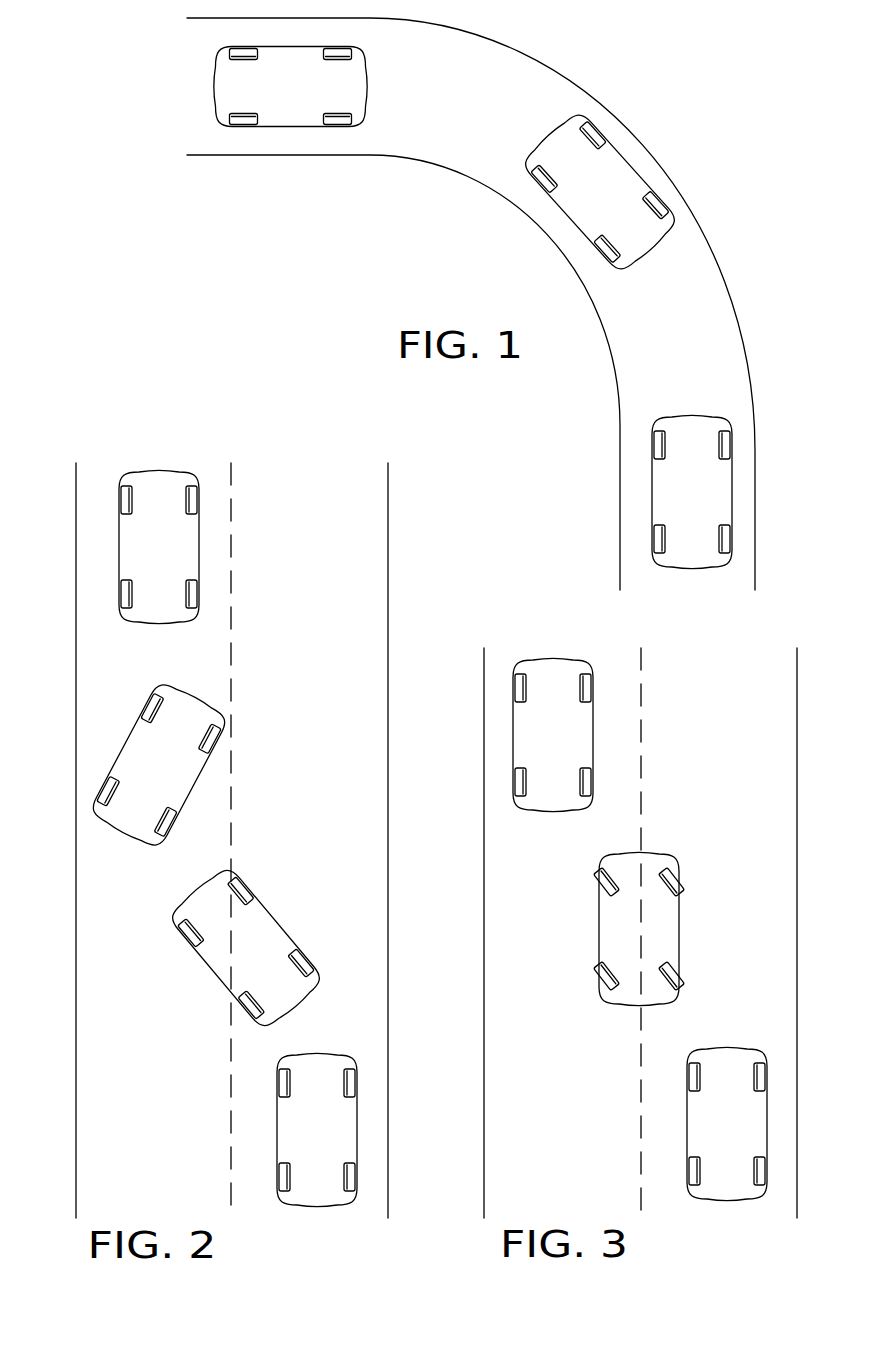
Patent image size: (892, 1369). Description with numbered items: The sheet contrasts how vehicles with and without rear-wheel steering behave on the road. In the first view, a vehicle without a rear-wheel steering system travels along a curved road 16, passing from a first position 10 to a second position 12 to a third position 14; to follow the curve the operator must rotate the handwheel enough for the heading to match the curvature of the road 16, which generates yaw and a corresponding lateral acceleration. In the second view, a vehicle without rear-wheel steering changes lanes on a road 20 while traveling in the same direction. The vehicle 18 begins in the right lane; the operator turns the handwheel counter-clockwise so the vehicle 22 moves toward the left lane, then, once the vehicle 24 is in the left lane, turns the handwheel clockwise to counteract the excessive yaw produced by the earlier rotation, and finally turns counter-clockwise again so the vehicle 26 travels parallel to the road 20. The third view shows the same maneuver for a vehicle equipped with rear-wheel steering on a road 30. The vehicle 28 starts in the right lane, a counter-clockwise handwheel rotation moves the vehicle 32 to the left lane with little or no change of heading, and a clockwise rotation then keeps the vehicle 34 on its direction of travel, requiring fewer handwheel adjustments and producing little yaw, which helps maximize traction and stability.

In FIG. 1, the first position 10 is at (652, 492).
In FIG. 1, the second position 12 is at (570, 216).
In FIG. 1, the third position 14 is at (291, 128).
In FIG. 1, the curved road 16 is at (542, 82).
In FIG. 2, the vehicle 18 is at (357, 1130).
In FIG. 2, the road 20 is at (107, 932).
In FIG. 2, the vehicle 22 is at (293, 948).
In FIG. 2, the vehicle 24 is at (125, 745).
In FIG. 2, the vehicle 26 is at (118, 548).
In FIG. 3, the vehicle 28 is at (768, 1127).
In FIG. 3, the road 30 is at (512, 978).
In FIG. 3, the vehicle 32 is at (680, 930).
In FIG. 3, the vehicle 34 is at (510, 735).